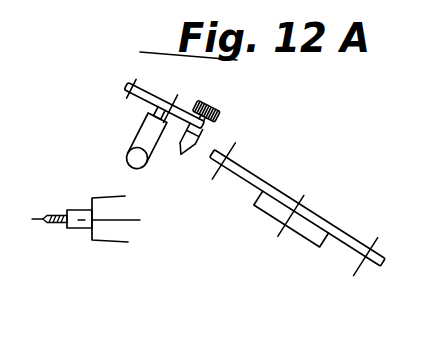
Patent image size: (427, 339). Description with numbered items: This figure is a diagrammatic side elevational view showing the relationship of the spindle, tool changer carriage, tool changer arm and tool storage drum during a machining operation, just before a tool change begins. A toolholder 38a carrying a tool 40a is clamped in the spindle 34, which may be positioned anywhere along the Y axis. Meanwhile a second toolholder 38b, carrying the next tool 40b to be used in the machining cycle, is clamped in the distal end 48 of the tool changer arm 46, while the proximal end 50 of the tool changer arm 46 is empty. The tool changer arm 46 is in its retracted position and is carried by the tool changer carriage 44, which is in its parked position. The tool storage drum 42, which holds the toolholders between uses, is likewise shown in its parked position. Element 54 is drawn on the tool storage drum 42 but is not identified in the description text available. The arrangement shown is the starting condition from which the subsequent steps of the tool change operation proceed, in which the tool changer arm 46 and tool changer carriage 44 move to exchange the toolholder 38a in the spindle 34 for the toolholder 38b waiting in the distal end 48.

The spindle 34 is at (110, 242).
The toolholder 38a is at (78, 229).
The tool 40a is at (52, 225).
The toolholder 38b is at (183, 156).
The tool 40b is at (218, 114).
The tool storage drum 42 is at (327, 202).
The tool changer carriage 44 is at (141, 132).
The tool changer arm 46 is at (148, 93).
The distal end 48 is at (207, 134).
The proximal end 50 is at (125, 86).
The slide block 54 is at (348, 234).